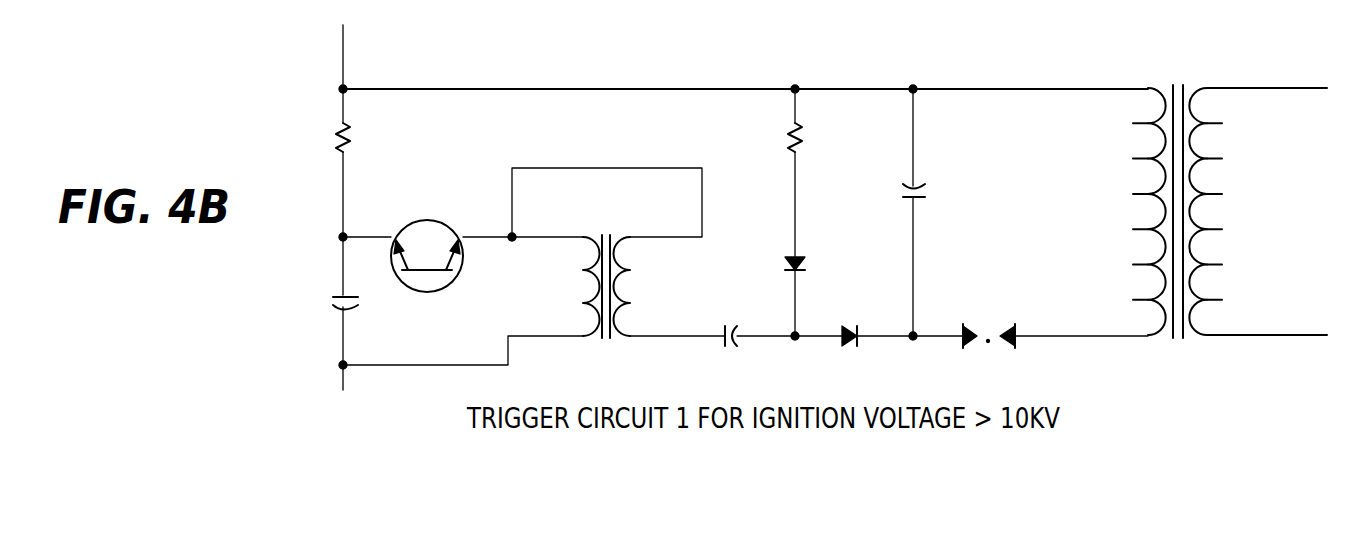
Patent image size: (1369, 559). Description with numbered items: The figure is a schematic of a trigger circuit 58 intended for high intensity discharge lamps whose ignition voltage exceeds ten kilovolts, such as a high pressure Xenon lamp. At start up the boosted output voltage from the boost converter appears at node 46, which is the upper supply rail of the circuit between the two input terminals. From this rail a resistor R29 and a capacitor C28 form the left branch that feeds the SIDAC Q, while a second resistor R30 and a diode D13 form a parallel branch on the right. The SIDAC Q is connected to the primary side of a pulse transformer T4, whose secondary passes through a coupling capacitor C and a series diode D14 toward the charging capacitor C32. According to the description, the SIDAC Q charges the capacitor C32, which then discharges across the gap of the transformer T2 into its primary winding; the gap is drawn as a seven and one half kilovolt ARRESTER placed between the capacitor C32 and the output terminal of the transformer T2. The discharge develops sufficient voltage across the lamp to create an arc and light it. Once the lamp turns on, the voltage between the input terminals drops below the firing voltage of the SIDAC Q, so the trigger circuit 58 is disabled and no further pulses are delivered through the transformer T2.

The node 46 is at (343, 89).
The trigger circuit 58 is at (1008, 72).
The resistor R29 is at (373, 137).
The resistor R30 is at (824, 137).
The capacitor C28 is at (320, 306).
The capacitor C32 is at (891, 194).
The capacitor C is at (730, 321).
The SIDAC Q is at (427, 257).
The pulse transformer T4 is at (534, 270).
The transformer T2 is at (1230, 230).
The diode D13 is at (820, 249).
The diode D14 is at (852, 320).
The 7.5KV arrester ARRESTER is at (990, 349).